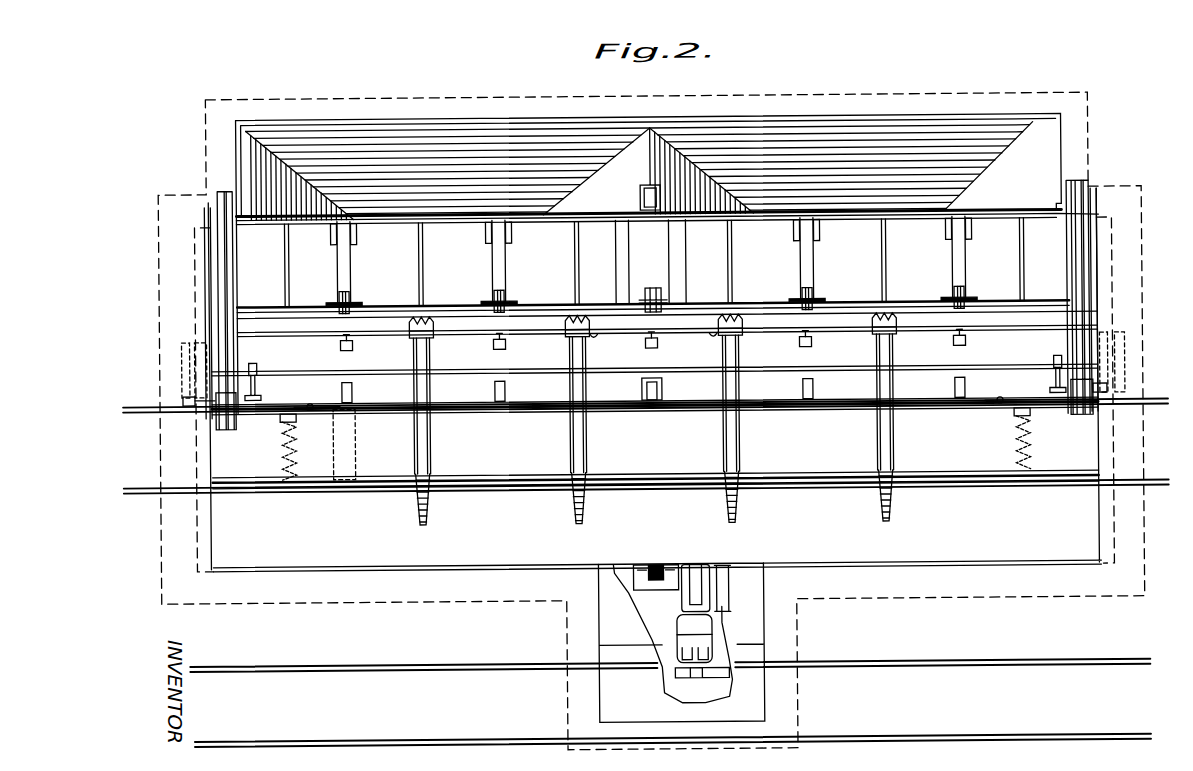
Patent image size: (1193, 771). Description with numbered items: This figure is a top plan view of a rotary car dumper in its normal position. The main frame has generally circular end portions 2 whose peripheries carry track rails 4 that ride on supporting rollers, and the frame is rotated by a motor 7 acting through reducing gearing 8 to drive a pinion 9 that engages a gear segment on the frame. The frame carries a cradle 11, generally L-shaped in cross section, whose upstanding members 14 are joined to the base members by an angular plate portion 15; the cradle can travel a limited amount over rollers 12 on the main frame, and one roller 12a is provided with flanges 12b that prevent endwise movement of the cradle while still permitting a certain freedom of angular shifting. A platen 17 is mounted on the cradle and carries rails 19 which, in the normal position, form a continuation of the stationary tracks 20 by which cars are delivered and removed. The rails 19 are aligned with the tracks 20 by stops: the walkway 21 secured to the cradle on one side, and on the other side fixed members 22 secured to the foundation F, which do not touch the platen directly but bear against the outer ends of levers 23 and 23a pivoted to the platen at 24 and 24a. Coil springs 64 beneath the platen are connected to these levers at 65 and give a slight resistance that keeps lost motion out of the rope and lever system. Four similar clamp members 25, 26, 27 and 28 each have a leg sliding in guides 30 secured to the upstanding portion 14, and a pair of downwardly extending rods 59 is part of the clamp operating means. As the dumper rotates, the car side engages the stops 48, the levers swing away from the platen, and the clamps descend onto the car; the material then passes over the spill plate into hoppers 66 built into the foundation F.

The end portions 2 is at (208, 194).
The track rails 4 is at (229, 191).
The motor 7 is at (704, 631).
The reducing gearing 8 is at (708, 601).
The pinion 9 is at (652, 590).
The cradle 11 is at (667, 335).
The rollers 12 is at (351, 300).
The roller 12a is at (655, 289).
The flanges 12b is at (665, 289).
The upstanding members 14 is at (497, 268).
The angular plate portion 15 is at (653, 387).
The platen 17 is at (655, 460).
The rails 19 is at (533, 396).
The stationary tracks 20 is at (147, 411).
The walkway 21 is at (663, 532).
The fixed members 22 is at (183, 393).
The lever 23 is at (1022, 399).
The lever 23a is at (294, 404).
The pivot 24 is at (1000, 400).
The pivot 24a is at (310, 404).
The clamp member 25 is at (891, 507).
The clamp member 26 is at (735, 512).
The clamp member 27 is at (584, 512).
The clamp member 28 is at (430, 514).
The guides 30 is at (590, 336).
The stops 48 is at (341, 345).
The rods 59 is at (432, 313).
The coil springs 64 is at (282, 451).
The connection 65 is at (283, 411).
The hoppers 66 is at (437, 155).
The foundation F is at (180, 368).